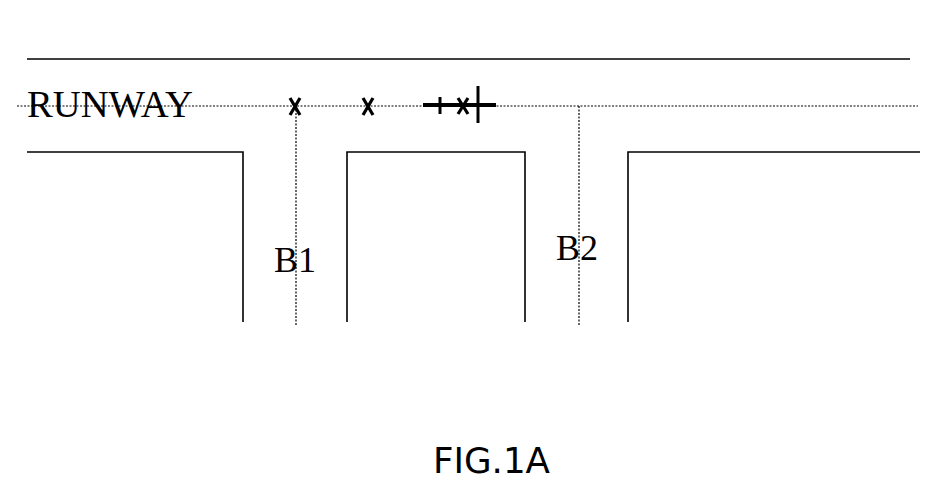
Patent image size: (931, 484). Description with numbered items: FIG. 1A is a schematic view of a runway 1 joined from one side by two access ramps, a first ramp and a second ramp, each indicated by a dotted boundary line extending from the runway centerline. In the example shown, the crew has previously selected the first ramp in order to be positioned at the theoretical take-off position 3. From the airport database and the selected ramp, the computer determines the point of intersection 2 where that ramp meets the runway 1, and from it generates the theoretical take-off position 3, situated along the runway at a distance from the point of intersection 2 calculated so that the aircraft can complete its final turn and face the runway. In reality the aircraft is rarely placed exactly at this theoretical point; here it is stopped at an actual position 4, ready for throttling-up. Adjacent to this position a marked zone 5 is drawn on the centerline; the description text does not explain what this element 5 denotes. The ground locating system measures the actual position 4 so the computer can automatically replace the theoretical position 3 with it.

The runway 1 is at (110, 78).
The point of intersection 2 is at (290, 101).
The theoretical take-off position 3 is at (365, 100).
The actual position of the aircraft 4 is at (463, 96).
The landing/touchdown zone bar with ticks 5 is at (432, 110).